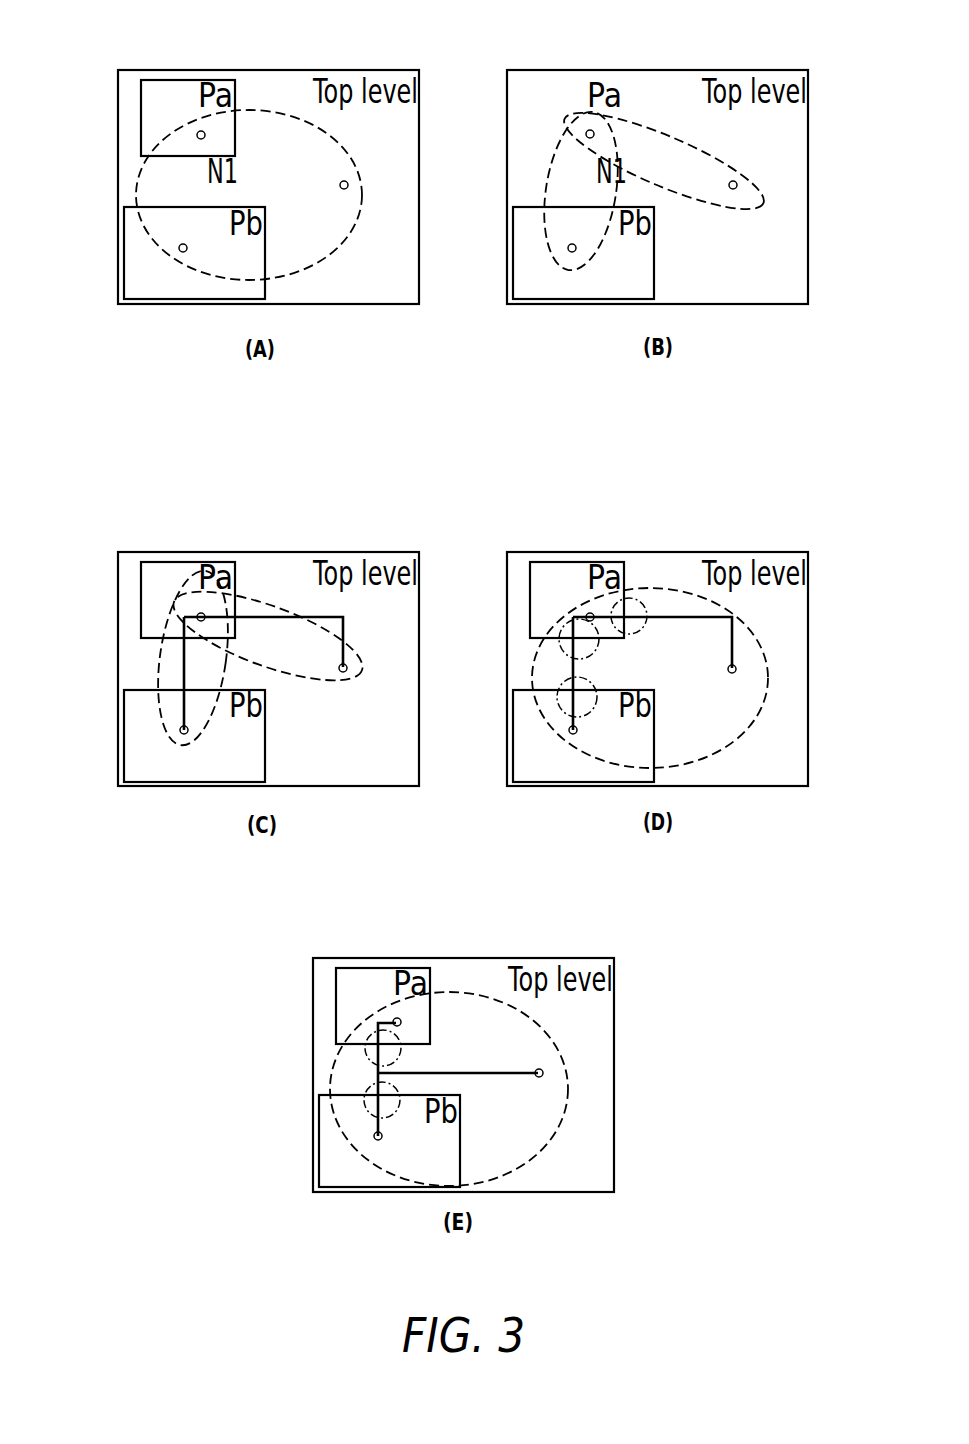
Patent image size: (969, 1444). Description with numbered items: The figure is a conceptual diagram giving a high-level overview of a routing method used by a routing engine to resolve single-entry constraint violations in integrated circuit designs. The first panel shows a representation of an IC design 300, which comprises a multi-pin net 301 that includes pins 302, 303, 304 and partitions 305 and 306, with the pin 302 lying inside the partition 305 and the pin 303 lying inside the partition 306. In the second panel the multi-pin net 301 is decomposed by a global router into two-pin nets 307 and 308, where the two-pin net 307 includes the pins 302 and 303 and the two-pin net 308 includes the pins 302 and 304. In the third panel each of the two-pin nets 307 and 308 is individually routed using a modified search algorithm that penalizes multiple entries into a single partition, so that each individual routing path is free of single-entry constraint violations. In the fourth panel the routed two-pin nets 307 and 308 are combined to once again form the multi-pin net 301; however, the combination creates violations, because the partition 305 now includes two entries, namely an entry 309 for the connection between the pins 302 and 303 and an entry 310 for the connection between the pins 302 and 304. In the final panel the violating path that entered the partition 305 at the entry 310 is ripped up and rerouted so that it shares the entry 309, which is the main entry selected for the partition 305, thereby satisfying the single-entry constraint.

The IC design 300 is at (118, 70).
The multi-pin net 301 is at (268, 110).
The pin 302 is at (197, 138).
The pin 303 is at (180, 251).
The pin 304 is at (348, 186).
The partition 305 is at (157, 113).
The partition 306 is at (197, 282).
The two-pin net 307 is at (570, 263).
The two-pin net 308 is at (763, 217).
The entry 309 is at (558, 638).
The entry 310 is at (642, 598).